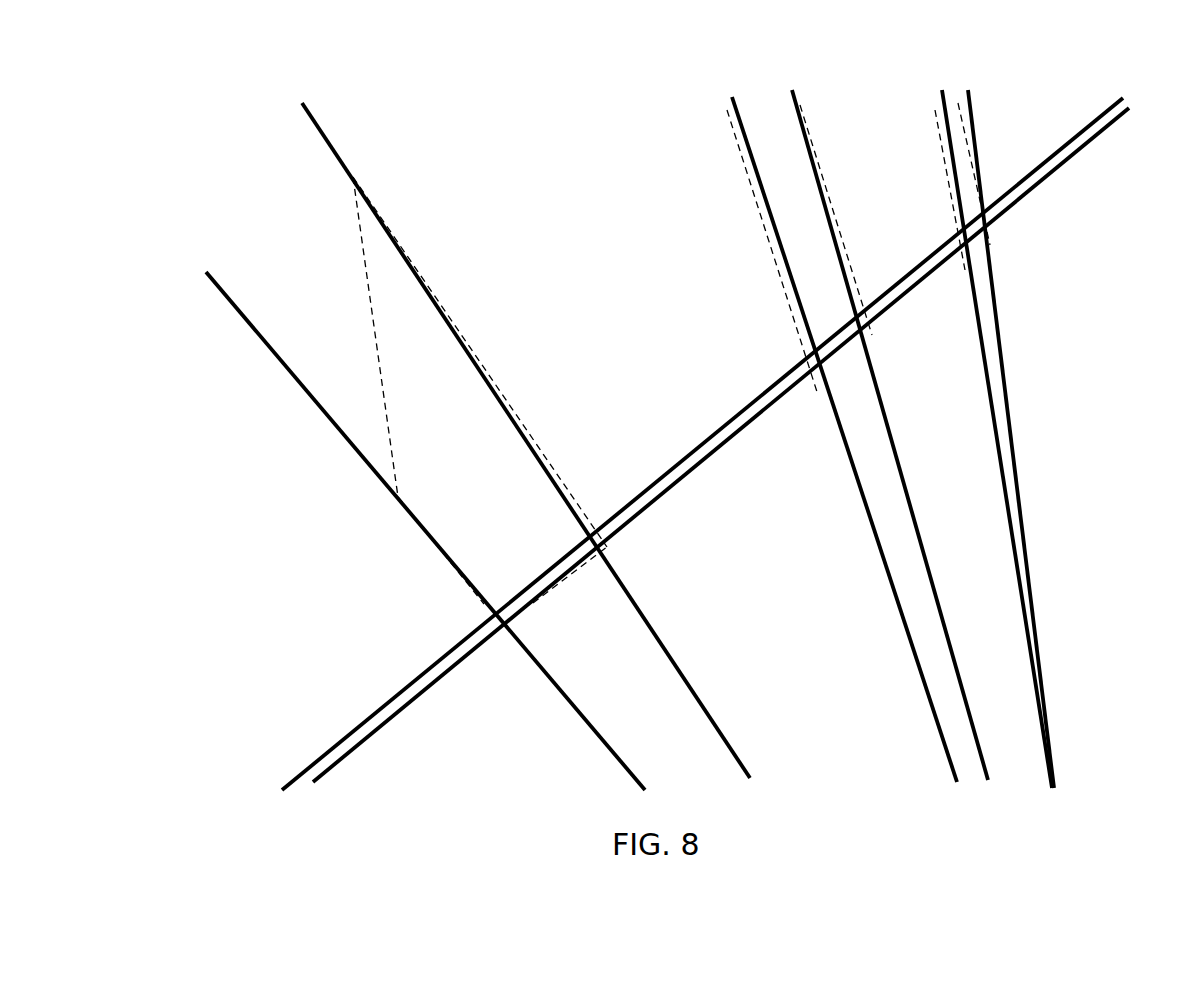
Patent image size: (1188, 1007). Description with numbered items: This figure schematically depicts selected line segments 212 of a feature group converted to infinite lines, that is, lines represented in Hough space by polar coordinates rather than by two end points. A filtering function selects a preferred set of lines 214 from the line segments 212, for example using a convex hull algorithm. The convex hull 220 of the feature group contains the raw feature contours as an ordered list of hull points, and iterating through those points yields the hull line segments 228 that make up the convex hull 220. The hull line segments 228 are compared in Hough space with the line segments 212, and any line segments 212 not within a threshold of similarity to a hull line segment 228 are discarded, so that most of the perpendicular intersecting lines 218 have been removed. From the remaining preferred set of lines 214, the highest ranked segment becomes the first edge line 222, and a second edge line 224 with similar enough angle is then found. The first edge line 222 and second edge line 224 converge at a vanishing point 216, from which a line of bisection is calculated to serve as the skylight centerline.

The line segments 212 is at (923, 153).
The preferred set of lines 214 is at (507, 643).
The vanishing point 216 is at (1062, 786).
The perpendicular intersecting lines 218 is at (430, 668).
The convex hull 220 is at (621, 547).
The first edge line 222 is at (334, 150).
The second edge line 224 is at (238, 307).
The hull line segments 228 is at (378, 330).